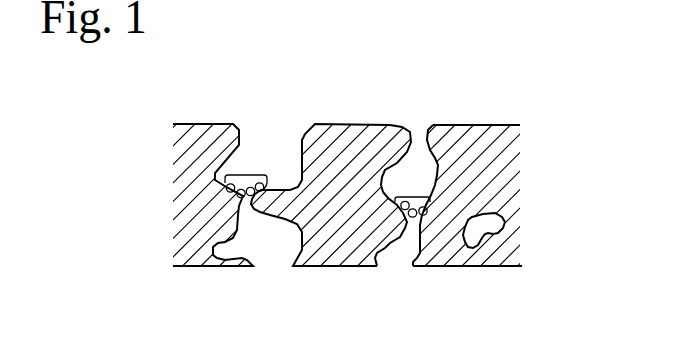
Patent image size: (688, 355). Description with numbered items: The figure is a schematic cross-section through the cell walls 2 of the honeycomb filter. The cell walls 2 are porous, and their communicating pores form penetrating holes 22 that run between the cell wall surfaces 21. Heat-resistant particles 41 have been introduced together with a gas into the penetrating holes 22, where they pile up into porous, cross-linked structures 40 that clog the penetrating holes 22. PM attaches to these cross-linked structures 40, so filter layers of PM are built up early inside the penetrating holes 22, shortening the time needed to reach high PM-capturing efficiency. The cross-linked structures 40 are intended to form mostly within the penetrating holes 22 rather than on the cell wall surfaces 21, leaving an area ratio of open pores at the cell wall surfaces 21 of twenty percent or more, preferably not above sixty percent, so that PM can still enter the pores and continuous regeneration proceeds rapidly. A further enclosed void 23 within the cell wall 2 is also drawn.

The cell walls 2 is at (497, 155).
The cell wall surfaces 21 is at (505, 124).
The penetrating holes 22 is at (428, 178).
The void 23 is at (493, 225).
The cross-linked structures 40 is at (245, 174).
The heat-resistant particles 41 is at (226, 186).